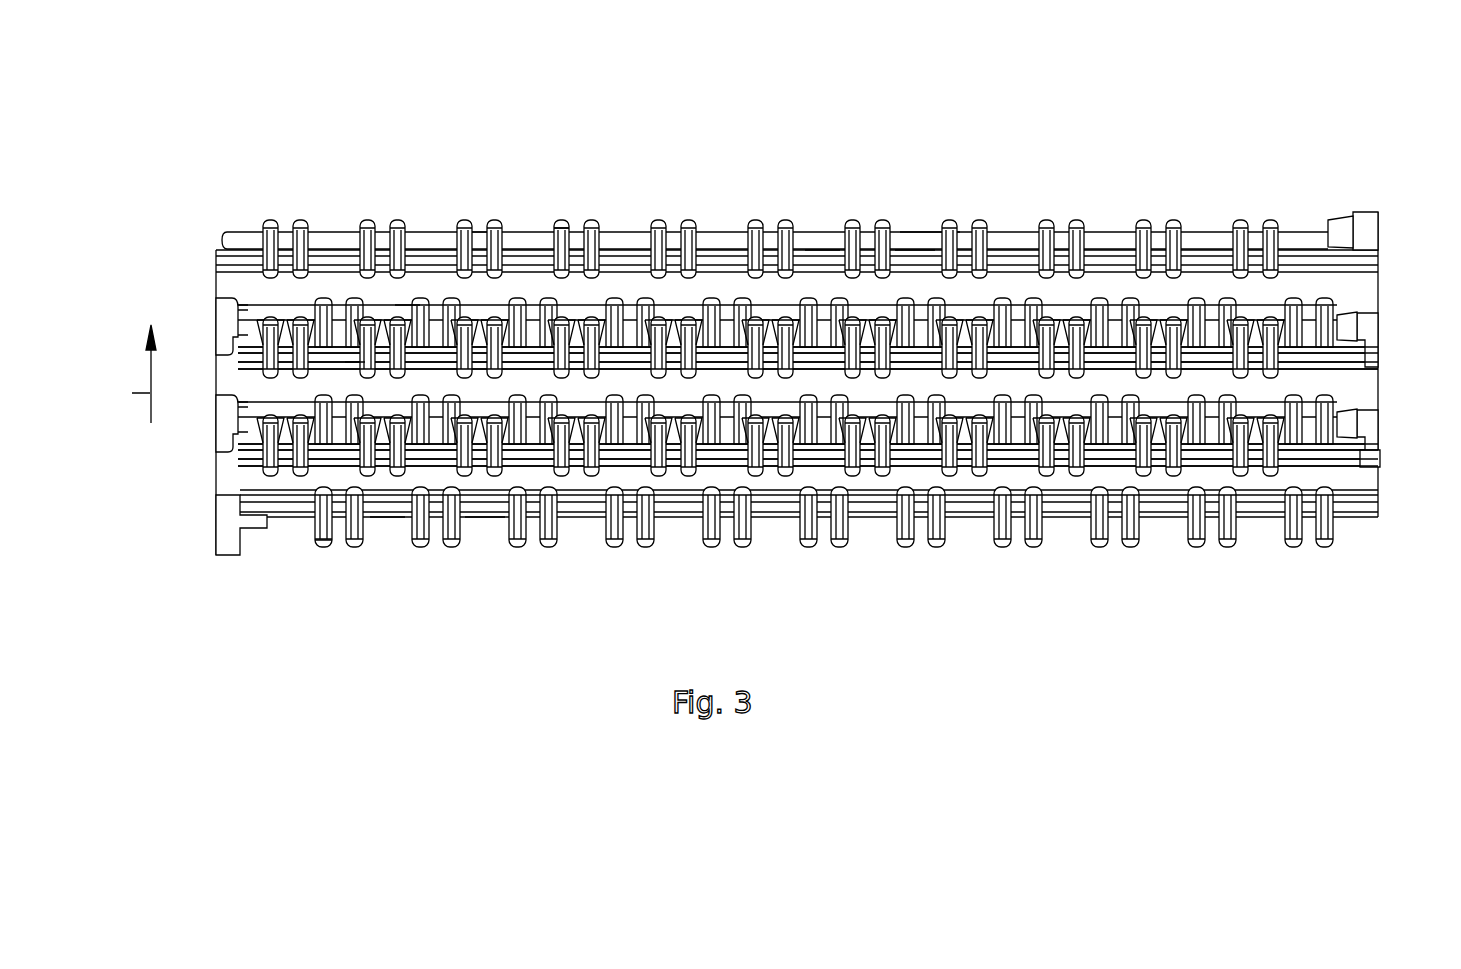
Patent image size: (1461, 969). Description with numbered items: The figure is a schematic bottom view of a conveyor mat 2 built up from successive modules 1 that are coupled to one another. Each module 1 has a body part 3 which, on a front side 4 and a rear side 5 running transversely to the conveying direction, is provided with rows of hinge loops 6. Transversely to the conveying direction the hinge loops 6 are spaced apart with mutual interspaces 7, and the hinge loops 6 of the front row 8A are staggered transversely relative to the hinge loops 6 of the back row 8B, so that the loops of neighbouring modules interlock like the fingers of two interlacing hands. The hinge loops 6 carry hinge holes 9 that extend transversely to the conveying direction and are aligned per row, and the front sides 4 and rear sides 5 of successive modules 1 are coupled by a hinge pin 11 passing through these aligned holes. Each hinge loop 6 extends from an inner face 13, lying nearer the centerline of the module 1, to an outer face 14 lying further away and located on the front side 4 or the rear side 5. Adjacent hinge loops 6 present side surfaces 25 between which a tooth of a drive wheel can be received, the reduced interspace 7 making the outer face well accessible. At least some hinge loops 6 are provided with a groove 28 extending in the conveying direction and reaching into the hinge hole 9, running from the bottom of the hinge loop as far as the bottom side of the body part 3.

The module 1 is at (1393, 268).
The conveyor mat 2 is at (198, 575).
The body part 3 is at (232, 286).
The front side 4 is at (518, 255).
The rear side 5 is at (583, 512).
The hinge loops 6 is at (644, 305).
The interspaces 7 is at (912, 222).
The front row 8A is at (1290, 203).
The back row 8B is at (1342, 547).
The hinge holes 9 is at (775, 530).
The hinge pin 11 is at (930, 232).
The inner faces 13 is at (470, 272).
The outer faces 14 is at (562, 222).
The side surfaces 25 is at (408, 312).
The groove 28 is at (480, 218).